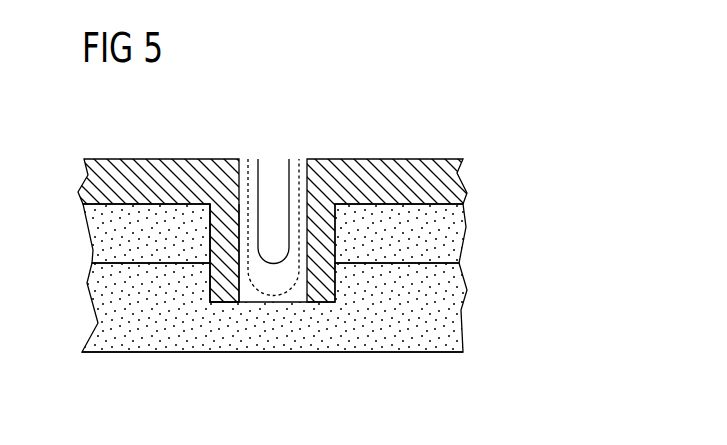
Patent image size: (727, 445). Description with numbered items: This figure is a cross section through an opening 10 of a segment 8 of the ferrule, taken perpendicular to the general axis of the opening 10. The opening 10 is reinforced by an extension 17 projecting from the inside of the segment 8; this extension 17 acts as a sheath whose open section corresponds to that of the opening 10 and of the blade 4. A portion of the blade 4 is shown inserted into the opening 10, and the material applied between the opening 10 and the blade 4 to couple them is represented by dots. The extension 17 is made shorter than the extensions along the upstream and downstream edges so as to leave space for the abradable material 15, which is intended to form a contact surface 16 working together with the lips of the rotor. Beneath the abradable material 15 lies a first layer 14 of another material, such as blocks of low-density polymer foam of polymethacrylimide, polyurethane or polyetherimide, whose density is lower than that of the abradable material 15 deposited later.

The blade 4 is at (275, 168).
The segment 8 is at (139, 166).
The opening 10 is at (243, 168).
The first layer 14 is at (456, 239).
The abradable material 15 is at (454, 321).
The contact surface 16 is at (334, 354).
The extension 17 is at (222, 292).